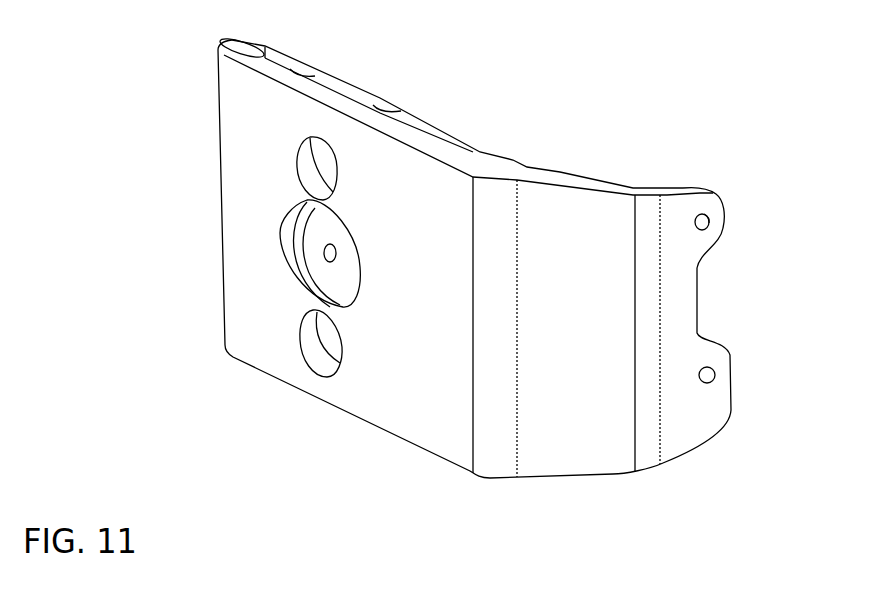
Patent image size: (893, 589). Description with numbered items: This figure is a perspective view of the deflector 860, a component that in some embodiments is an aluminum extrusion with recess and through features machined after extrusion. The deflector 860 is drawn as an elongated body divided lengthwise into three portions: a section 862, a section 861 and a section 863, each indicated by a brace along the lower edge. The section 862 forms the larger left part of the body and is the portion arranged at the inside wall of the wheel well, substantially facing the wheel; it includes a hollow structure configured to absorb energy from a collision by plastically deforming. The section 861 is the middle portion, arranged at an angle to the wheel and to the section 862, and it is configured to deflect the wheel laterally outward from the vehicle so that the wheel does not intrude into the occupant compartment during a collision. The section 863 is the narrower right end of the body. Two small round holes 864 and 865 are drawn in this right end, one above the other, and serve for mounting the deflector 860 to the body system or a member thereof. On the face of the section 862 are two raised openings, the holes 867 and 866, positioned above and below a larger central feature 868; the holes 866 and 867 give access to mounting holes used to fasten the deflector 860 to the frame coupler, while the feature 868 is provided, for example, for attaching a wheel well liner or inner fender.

The deflector 860 is at (610, 78).
The section 861 is at (640, 505).
The section 862 is at (467, 530).
The section 863 is at (753, 467).
The hole 864 is at (710, 205).
The hole 865 is at (716, 375).
The hole 866 is at (315, 338).
The hole 867 is at (298, 157).
The feature 868 is at (280, 230).